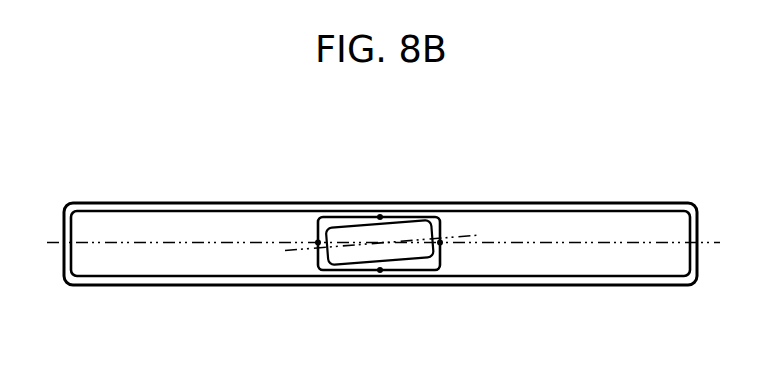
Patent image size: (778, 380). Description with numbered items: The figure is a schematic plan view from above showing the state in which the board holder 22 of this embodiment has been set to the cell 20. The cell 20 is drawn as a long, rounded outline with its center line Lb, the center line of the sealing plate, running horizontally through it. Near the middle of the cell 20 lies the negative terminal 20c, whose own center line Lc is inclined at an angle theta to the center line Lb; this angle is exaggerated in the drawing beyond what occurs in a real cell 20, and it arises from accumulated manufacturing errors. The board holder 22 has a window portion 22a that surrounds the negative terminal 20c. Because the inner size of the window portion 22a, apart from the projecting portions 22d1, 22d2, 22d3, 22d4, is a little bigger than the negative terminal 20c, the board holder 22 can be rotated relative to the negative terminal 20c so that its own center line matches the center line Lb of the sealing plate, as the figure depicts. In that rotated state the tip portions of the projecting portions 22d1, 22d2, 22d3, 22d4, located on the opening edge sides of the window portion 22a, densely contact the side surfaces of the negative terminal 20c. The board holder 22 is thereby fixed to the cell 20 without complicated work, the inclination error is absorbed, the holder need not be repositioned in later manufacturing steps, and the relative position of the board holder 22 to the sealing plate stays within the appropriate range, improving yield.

The cell 20 is at (672, 202).
The board holder 22 is at (547, 225).
The window portion 22a is at (323, 221).
The negative terminal 20c is at (348, 235).
The projecting portion 22d1 is at (382, 214).
The projecting portion 22d2 is at (318, 247).
The projecting portion 22d3 is at (381, 273).
The projecting portion 22d4 is at (442, 239).
The center line of the sealing plate Lb is at (589, 237).
The center line of the negative terminal Lc is at (472, 230).